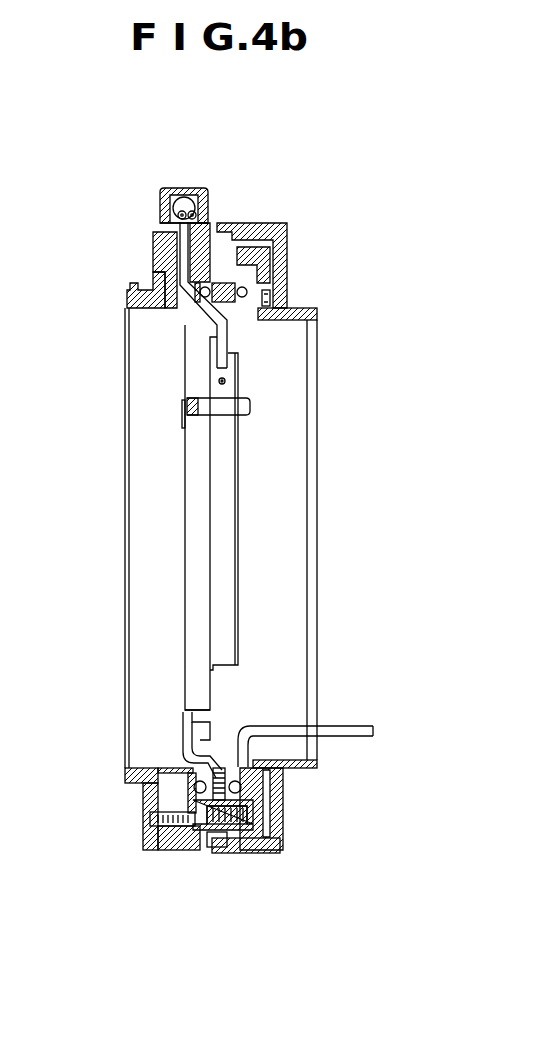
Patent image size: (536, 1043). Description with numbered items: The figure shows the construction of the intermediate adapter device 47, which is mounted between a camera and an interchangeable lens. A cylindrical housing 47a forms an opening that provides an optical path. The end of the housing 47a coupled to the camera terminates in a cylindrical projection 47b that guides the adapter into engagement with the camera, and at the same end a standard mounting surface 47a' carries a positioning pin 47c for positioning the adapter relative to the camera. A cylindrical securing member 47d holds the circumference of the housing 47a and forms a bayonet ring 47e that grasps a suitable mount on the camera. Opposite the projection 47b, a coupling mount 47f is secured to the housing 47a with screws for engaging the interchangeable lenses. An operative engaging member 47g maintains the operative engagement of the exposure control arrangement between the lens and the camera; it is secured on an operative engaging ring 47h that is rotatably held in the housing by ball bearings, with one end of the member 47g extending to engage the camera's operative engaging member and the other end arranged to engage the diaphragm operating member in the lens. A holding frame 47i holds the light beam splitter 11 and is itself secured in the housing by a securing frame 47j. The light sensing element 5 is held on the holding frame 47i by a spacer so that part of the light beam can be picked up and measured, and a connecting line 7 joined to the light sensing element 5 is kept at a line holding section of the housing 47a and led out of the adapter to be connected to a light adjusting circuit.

The intermediate adapter device 47 is at (242, 188).
The cylindrical housing 47a is at (260, 243).
The standard mounting surface 47a' is at (270, 807).
The cylindrical projection 47b is at (292, 312).
The positioning pin 47c is at (283, 283).
The cylindrical securing member 47d is at (240, 851).
The bayonet ring 47e is at (283, 797).
The coupling mount 47f is at (133, 783).
The operative engaging member 47g is at (357, 731).
The operative engaging ring 47h is at (215, 760).
The holding frame 47i is at (238, 462).
The securing frame 47j is at (202, 725).
The connecting line 7 is at (183, 278).
The light sensing element 5 is at (236, 405).
The light beam splitter 11 is at (177, 572).